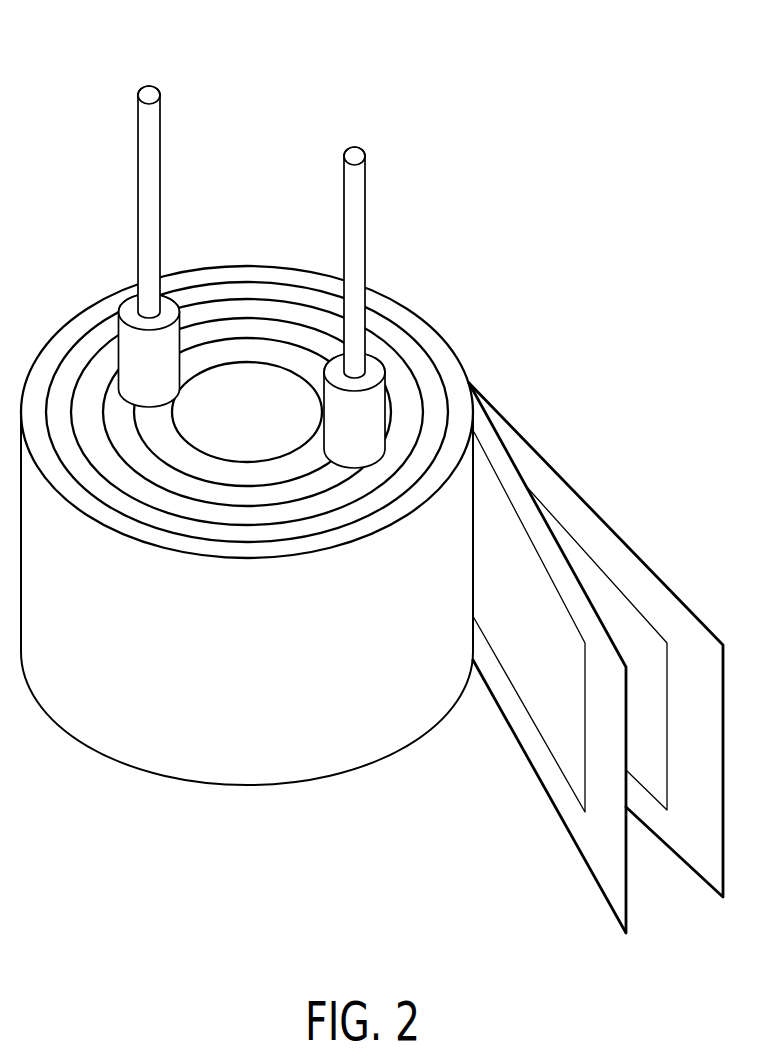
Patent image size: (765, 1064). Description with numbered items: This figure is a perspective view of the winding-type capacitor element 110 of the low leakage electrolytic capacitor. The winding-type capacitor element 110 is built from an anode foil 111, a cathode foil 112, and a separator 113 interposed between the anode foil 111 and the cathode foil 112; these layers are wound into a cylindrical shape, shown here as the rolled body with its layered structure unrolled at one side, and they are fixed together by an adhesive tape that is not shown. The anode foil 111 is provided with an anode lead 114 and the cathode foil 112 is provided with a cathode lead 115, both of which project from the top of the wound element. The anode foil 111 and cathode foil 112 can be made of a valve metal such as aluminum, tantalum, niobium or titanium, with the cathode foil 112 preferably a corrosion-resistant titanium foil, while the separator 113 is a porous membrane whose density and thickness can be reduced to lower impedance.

The winding-type capacitor element 110 is at (372, 504).
The anode foil 111 is at (555, 718).
The cathode foil 112 is at (627, 620).
The separator 113 is at (613, 847).
The anode lead 114 is at (147, 153).
The cathode lead 115 is at (353, 195).